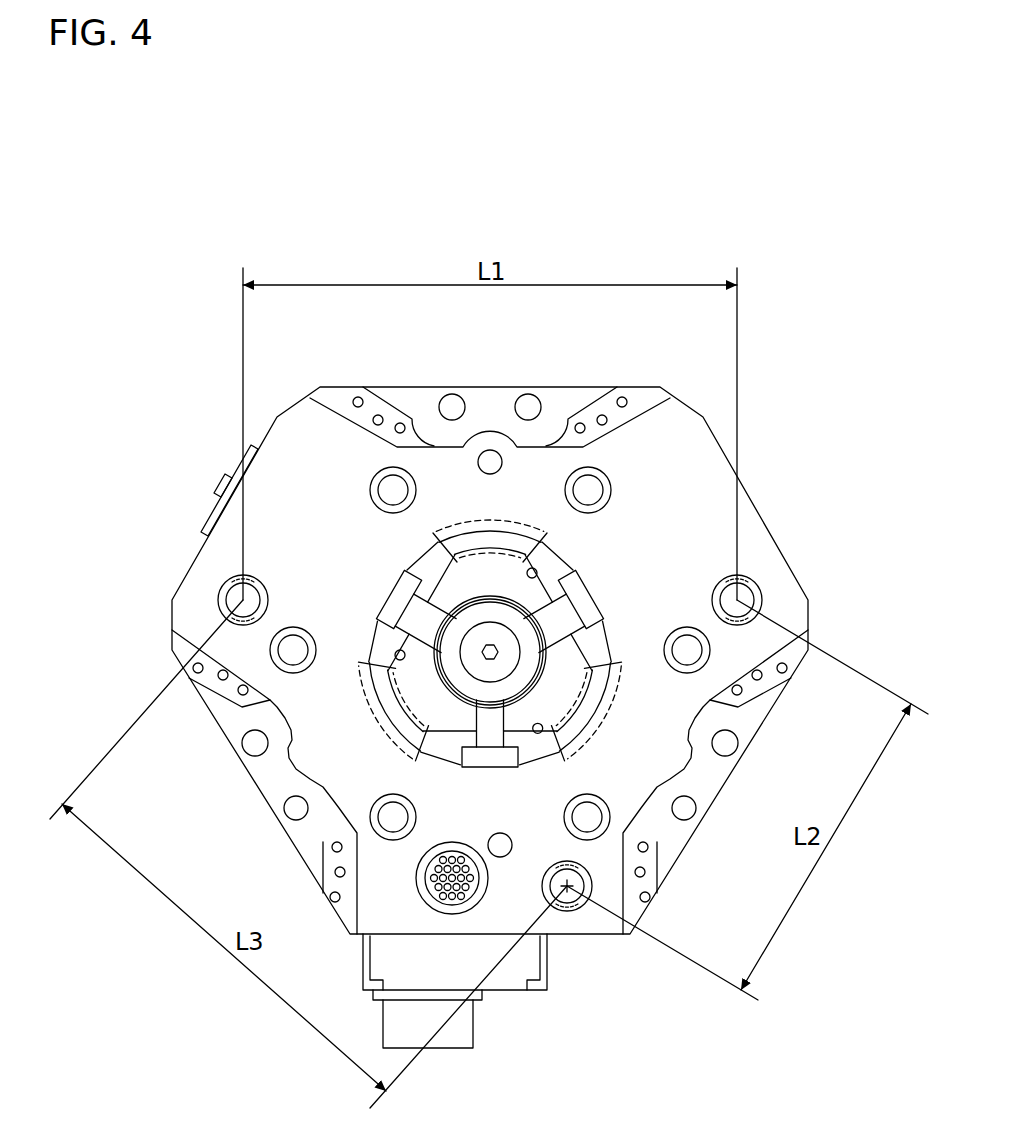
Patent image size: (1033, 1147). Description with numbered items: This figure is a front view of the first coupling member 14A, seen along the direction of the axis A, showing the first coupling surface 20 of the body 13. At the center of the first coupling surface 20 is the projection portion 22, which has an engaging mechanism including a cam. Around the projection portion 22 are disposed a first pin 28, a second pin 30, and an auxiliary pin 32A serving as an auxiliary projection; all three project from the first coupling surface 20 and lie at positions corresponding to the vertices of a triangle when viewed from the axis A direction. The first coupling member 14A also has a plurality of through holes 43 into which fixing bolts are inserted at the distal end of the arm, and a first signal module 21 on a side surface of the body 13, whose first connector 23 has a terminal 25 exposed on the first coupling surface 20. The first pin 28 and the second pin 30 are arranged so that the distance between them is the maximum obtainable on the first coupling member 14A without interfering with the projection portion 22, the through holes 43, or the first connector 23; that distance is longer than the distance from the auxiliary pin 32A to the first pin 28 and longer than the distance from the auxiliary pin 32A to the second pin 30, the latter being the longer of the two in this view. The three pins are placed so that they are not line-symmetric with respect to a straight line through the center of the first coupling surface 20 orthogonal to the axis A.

The body 13 is at (772, 526).
The first coupling member 14A is at (822, 478).
The first coupling surface 20 is at (690, 480).
The first signal module 21 is at (510, 980).
The projection portion 22 is at (497, 565).
The first connector 23 is at (388, 933).
The terminal 25 is at (445, 893).
The first pin 28 is at (745, 594).
The second pin 30 is at (243, 600).
The auxiliary pin 32A is at (566, 912).
The through hole 43 is at (393, 487).
The axis A is at (492, 650).